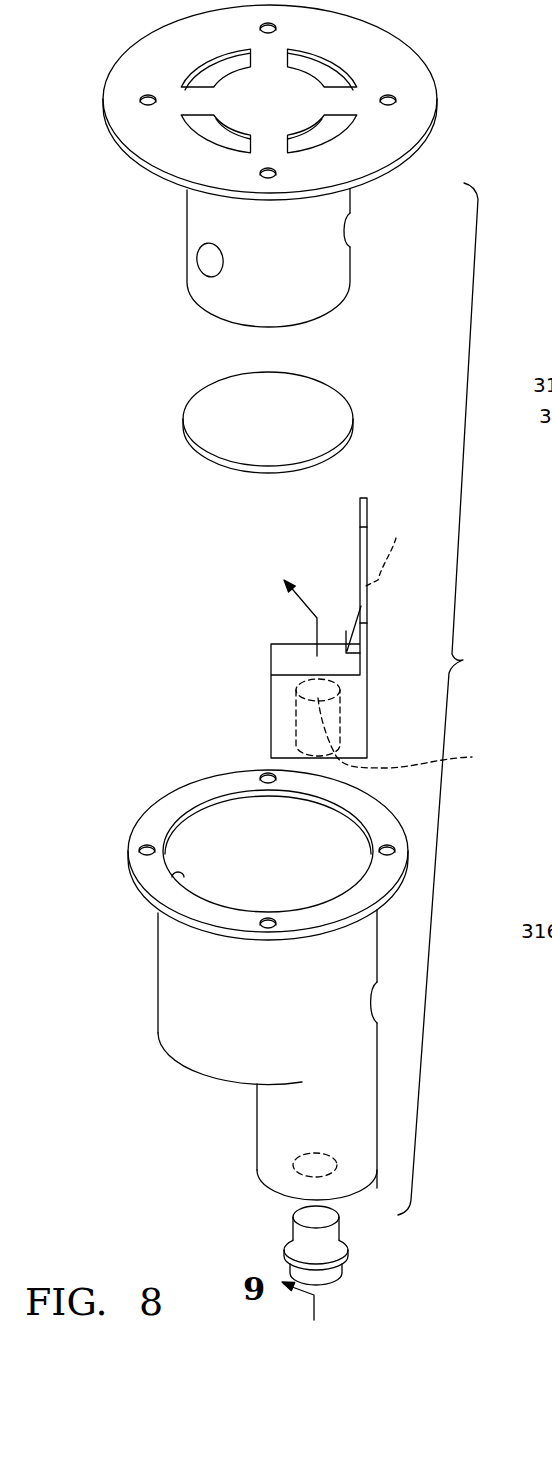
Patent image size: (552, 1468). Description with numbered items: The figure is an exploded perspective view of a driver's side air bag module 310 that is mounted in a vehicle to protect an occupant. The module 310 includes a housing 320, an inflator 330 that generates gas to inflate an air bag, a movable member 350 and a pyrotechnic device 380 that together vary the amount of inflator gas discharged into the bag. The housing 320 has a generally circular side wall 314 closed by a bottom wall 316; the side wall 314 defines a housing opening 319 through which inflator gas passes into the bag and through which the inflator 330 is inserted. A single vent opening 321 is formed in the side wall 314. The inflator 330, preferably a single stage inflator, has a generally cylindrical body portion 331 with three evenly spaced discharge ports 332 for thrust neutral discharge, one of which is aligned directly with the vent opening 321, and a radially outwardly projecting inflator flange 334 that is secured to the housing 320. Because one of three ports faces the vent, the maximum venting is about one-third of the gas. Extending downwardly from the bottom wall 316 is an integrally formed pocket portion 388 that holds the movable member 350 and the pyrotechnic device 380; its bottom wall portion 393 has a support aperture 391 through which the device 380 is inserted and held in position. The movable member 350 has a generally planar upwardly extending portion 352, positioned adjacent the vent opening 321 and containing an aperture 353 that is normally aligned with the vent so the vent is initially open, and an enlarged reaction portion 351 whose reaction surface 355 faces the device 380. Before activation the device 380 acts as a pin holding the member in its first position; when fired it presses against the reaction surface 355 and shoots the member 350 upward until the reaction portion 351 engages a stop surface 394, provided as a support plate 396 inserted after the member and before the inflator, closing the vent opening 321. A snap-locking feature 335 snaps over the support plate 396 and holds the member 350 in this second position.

The air bag module 310 is at (463, 660).
The side wall 314 is at (168, 982).
The bottom wall 316 is at (220, 1078).
The housing opening 319 is at (176, 878).
The housing 320 is at (268, 1059).
The vent opening 321 is at (369, 999).
The inflator 330 is at (261, 260).
The body portion 331 is at (312, 292).
The discharge ports 332 is at (203, 267).
The inflator flange 334 is at (143, 60).
The snap-locking feature 335 is at (349, 649).
The movable member 350 is at (331, 600).
The reaction portion 351 is at (277, 718).
The upwardly extending portion 352 is at (368, 508).
The aperture 353 is at (403, 551).
The reaction surface 355 is at (416, 733).
The pyrotechnic device 380 is at (303, 1237).
The pocket portion 388 is at (255, 1148).
The support aperture 391 is at (337, 1167).
The bottom wall portion 393 is at (277, 1192).
The stop surface 394 is at (187, 456).
The support plate 396 is at (234, 410).